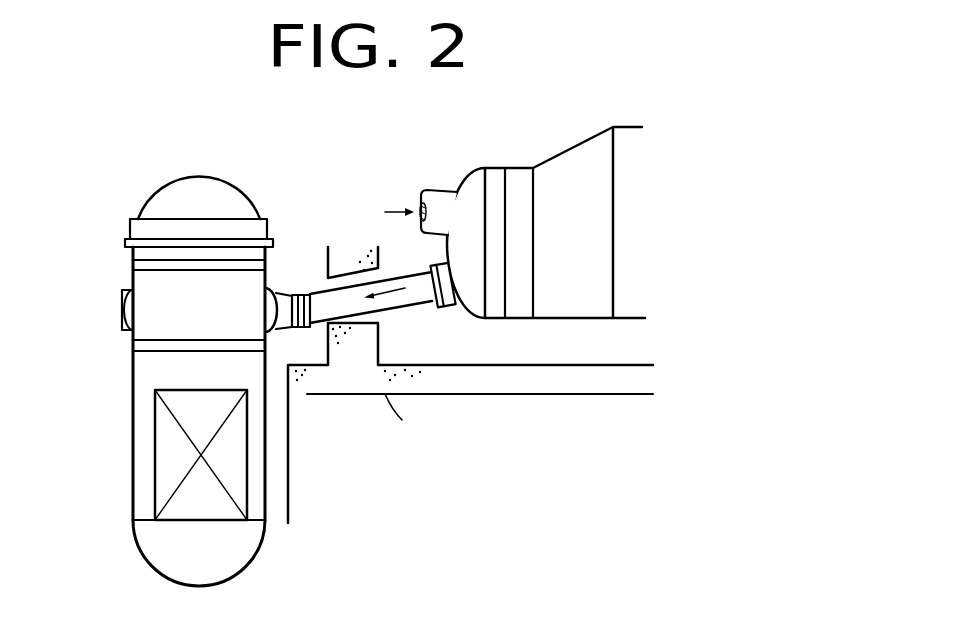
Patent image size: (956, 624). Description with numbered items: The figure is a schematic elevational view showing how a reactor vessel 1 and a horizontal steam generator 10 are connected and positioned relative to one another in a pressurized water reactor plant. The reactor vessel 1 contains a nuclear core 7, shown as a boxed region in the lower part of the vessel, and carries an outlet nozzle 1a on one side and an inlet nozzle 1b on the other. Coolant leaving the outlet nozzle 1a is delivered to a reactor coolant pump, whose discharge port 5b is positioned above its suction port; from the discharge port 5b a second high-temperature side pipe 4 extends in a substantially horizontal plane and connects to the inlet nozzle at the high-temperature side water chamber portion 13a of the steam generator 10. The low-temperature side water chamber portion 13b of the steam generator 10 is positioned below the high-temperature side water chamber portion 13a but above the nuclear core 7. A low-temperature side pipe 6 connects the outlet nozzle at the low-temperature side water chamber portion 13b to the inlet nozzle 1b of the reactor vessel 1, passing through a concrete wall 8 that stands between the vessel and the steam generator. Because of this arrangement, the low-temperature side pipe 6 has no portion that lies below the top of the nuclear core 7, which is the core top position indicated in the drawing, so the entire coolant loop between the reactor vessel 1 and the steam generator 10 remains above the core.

The reactor vessel 1 is at (140, 188).
The outlet nozzle 1a is at (122, 291).
The inlet nozzle 1b is at (270, 286).
The second high-temperature side pipe 4 is at (440, 200).
The discharge port 5b is at (373, 187).
The low-temperature side pipe 6 is at (318, 300).
The nuclear core 7 is at (167, 462).
The concrete wall 8 is at (350, 370).
The horizontal steam generator 10 is at (567, 143).
The high-temperature side water chamber portion 13a is at (473, 288).
The low-temperature side water chamber portion 13b is at (475, 193).